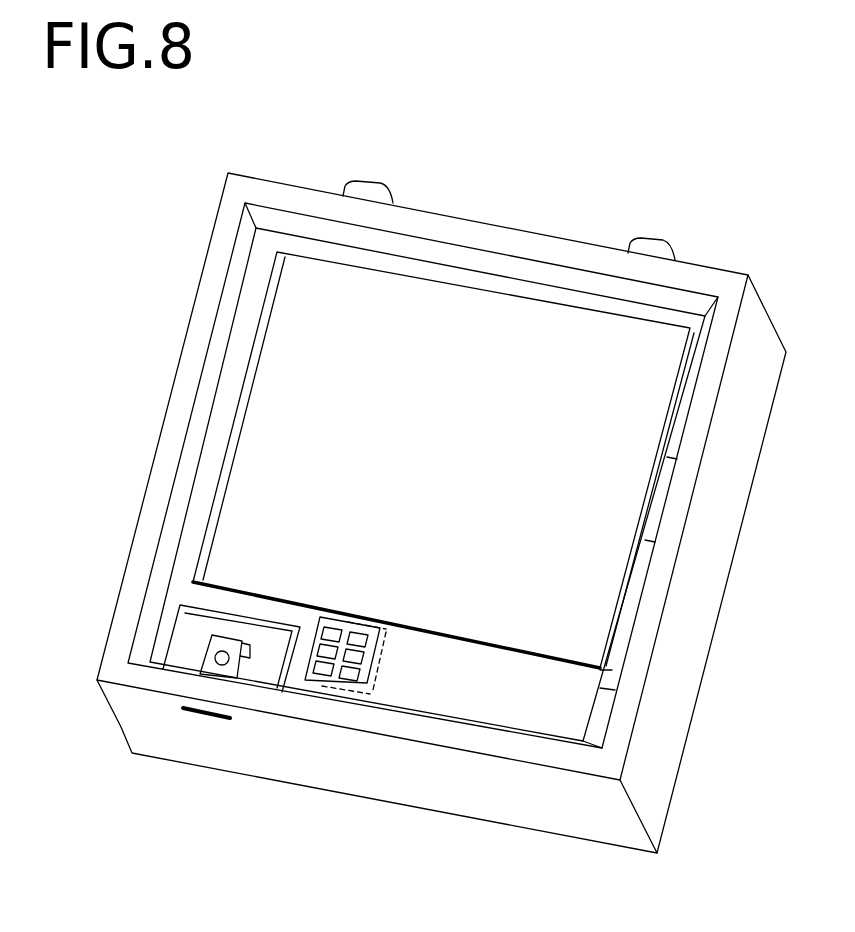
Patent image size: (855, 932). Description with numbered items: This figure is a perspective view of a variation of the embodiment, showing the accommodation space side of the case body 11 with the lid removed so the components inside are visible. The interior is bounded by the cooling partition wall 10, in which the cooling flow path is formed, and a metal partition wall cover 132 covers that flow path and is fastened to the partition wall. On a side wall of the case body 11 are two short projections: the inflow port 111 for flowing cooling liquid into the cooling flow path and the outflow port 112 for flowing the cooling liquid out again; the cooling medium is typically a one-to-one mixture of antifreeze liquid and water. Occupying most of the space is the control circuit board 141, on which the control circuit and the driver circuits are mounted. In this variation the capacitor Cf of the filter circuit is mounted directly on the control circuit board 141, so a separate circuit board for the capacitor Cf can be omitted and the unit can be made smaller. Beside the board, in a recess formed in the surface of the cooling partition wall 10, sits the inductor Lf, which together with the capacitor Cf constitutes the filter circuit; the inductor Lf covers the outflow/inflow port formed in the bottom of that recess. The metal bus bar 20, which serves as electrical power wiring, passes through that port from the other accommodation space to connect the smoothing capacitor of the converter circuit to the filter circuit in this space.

The cooling partition wall 10 is at (203, 507).
The case body 11 is at (667, 747).
The metal bus bar 20 is at (207, 667).
The inflow port 111 is at (652, 247).
The outflow port 112 is at (375, 190).
The partition wall cover 132 is at (263, 332).
The control circuit board 141 is at (462, 327).
The inductor Lf is at (263, 673).
The capacitor Cf is at (372, 678).